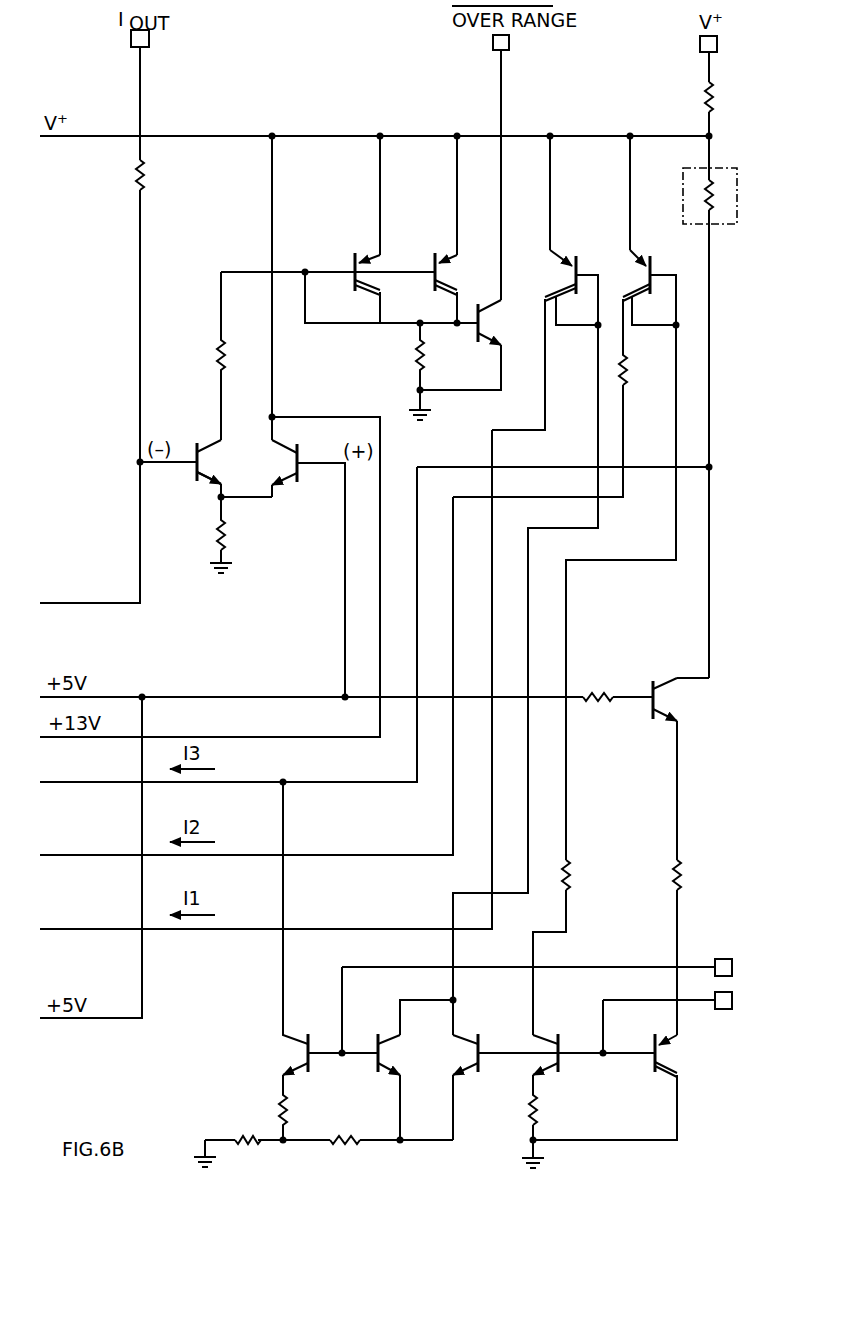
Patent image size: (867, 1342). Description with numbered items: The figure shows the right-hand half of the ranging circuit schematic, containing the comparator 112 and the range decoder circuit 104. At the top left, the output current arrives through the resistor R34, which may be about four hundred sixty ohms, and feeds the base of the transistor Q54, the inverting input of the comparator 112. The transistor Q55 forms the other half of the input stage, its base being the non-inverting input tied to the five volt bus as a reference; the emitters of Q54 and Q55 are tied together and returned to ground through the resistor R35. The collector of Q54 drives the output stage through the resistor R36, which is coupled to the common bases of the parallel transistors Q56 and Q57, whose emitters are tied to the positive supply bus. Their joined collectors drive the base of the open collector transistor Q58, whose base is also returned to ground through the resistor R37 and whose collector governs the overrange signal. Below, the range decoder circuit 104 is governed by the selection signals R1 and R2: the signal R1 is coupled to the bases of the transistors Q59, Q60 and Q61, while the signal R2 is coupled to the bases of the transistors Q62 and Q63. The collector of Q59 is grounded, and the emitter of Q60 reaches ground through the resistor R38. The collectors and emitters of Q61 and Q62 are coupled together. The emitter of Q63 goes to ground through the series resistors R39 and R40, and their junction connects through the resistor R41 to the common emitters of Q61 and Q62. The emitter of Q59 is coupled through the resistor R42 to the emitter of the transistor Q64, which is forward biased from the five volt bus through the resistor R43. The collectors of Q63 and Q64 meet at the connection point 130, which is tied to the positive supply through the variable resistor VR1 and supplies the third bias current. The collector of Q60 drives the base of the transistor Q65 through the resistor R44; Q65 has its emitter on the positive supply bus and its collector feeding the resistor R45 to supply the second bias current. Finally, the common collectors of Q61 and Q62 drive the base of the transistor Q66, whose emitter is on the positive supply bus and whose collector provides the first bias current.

The resistor R34 is at (145, 186).
The resistor R35 is at (228, 538).
The resistor R36 is at (214, 350).
The resistor R37 is at (414, 358).
The resistor R38 is at (542, 1114).
The resistor R39 is at (290, 1108).
The resistor R40 is at (248, 1130).
The resistor R41 is at (336, 1130).
The resistor R42 is at (672, 874).
The resistor R43 is at (606, 678).
The resistor R44 is at (572, 874).
The resistor R45 is at (629, 370).
The transistor Q54 is at (204, 432).
The transistor Q55 is at (296, 445).
The transistor Q56 is at (366, 252).
The transistor Q57 is at (447, 252).
The open collector transistor Q58 is at (492, 348).
The transistor Q59 is at (662, 1036).
The transistor Q60 is at (543, 1034).
The transistor Q61 is at (463, 1030).
The transistor Q62 is at (384, 1030).
The transistor Q63 is at (292, 1030).
The transistor Q64 is at (660, 674).
The transistor Q65 is at (648, 256).
The transistor Q66 is at (569, 256).
The variable resistor VR1 is at (683, 184).
The selection signal R1 is at (682, 1022).
The selection signal R2 is at (551, 1006).
The connection point 130 is at (753, 478).
The comparator 112 is at (355, 379).
The range decoder circuit 104 is at (616, 810).